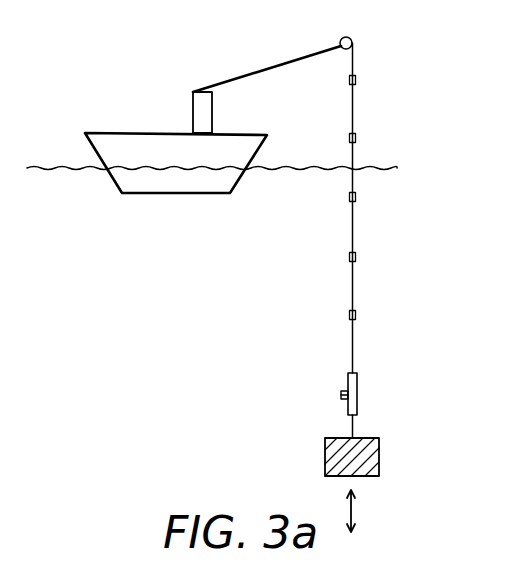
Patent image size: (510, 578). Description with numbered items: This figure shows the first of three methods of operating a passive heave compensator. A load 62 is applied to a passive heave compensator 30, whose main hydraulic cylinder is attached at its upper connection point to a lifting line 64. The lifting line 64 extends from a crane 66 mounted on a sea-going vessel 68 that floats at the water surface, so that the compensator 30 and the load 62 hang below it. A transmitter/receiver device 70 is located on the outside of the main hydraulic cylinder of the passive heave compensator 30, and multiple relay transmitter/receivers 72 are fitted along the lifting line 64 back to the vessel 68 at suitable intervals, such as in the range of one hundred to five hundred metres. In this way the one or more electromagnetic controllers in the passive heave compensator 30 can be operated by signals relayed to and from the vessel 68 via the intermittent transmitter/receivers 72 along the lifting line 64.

The passive heave compensator 30 is at (357, 378).
The load 62 is at (380, 450).
The lifting line 64 is at (352, 110).
The crane 66 is at (272, 68).
The sea-going vessel 68 is at (188, 161).
The transmitter/receiver device 70 is at (341, 395).
The relay transmitter/receivers 72 is at (356, 80).